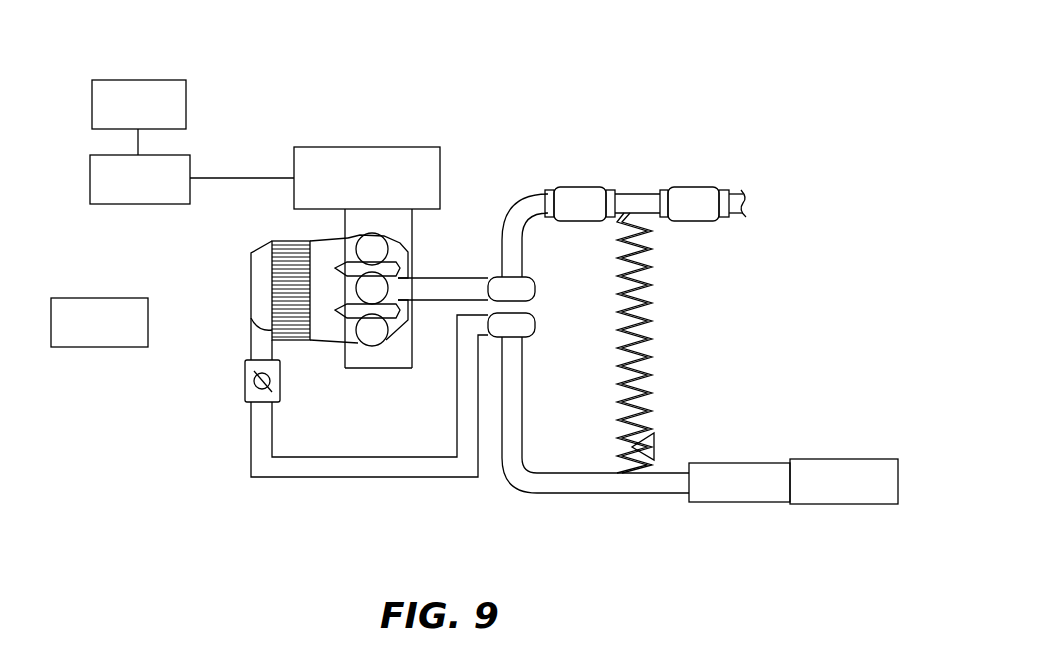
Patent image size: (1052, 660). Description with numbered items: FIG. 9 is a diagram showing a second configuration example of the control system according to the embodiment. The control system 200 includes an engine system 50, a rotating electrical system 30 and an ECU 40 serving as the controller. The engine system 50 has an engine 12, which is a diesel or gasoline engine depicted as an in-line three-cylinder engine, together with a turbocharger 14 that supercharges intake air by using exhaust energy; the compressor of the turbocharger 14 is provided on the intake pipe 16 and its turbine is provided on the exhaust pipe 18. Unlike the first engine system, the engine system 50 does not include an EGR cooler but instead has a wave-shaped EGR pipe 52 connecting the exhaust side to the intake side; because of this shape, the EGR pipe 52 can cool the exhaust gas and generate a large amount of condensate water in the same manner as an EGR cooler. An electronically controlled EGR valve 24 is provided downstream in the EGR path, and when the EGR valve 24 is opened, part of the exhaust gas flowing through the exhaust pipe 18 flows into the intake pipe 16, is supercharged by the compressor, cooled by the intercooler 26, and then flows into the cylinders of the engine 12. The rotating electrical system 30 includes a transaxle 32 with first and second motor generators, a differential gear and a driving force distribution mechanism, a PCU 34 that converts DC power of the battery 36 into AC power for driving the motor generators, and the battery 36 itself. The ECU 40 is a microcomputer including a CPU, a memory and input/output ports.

The control system 200 is at (710, 110).
The engine 12 is at (364, 376).
The turbocharger 14 is at (543, 305).
The intake pipe 16 is at (372, 480).
The exhaust pipe 18 is at (473, 278).
The EGR valve 24 is at (656, 444).
The intercooler 26 is at (251, 310).
The rotating electrical system 30 is at (248, 136).
The transaxle 32 is at (395, 147).
The PCU 34 is at (90, 170).
The battery 36 is at (92, 90).
The ECU 40 is at (51, 318).
The engine system 50 is at (194, 466).
The EGR pipe 52 is at (655, 270).